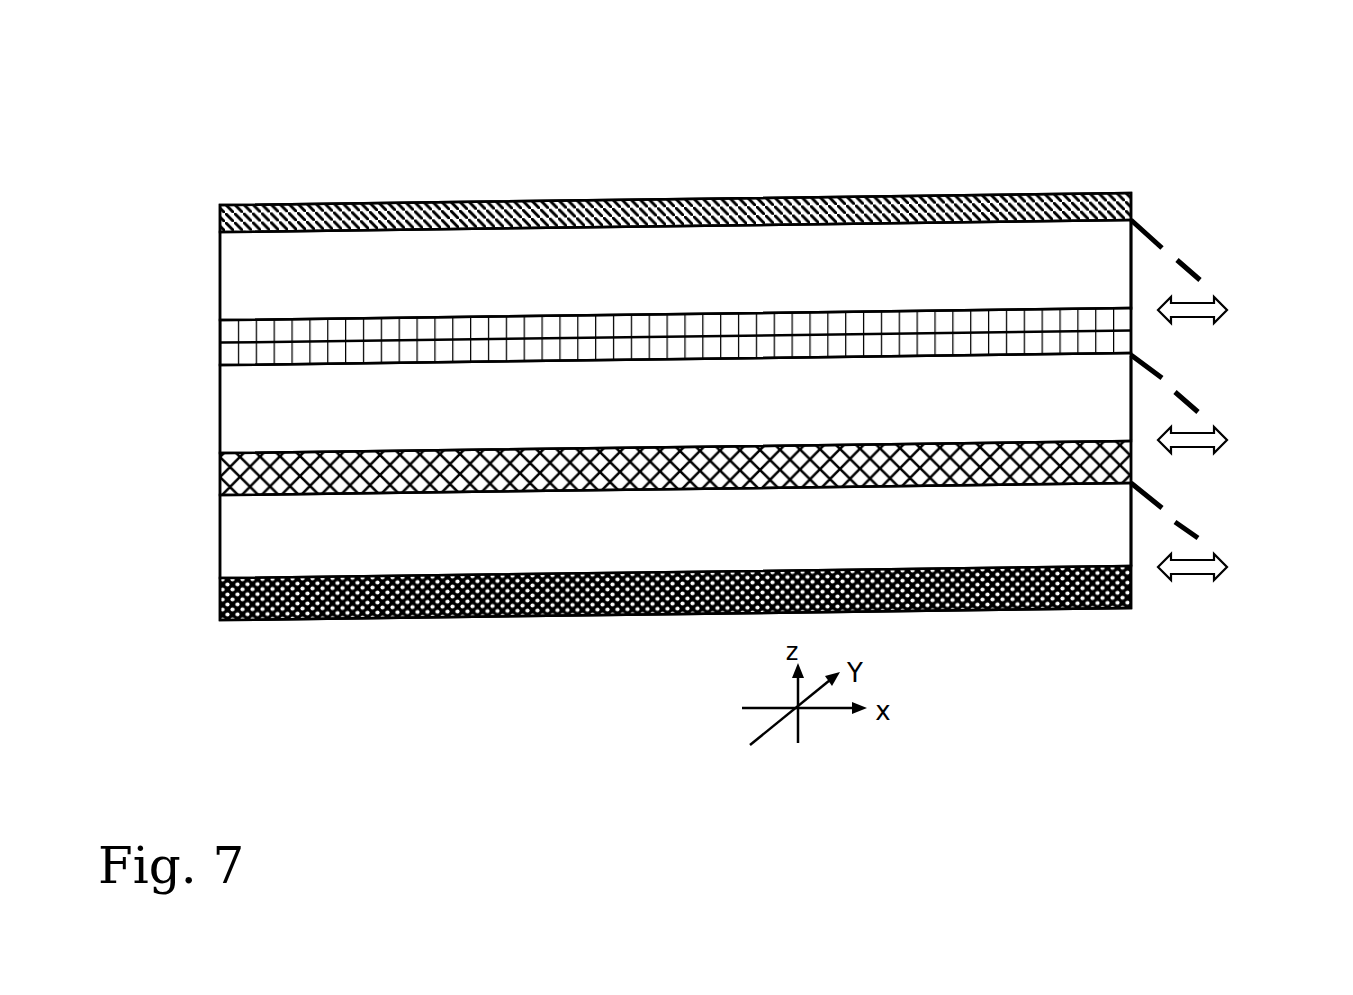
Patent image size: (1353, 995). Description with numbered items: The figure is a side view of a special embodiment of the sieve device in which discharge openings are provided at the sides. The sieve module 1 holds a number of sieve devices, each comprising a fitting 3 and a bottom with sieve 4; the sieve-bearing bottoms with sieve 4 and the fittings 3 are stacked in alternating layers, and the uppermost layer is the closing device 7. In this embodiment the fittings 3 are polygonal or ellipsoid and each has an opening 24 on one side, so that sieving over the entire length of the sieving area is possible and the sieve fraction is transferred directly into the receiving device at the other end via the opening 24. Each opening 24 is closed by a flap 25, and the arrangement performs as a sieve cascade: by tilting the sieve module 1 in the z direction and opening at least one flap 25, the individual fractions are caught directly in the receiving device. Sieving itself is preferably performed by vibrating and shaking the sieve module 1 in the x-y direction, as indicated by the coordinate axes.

The sieve module 1 is at (646, 166).
The fitting 3 is at (247, 265).
The bottom with sieve 4 is at (220, 332).
The closing device 7 is at (1112, 199).
The opening 24 is at (1135, 277).
The flap 25 is at (1153, 232).